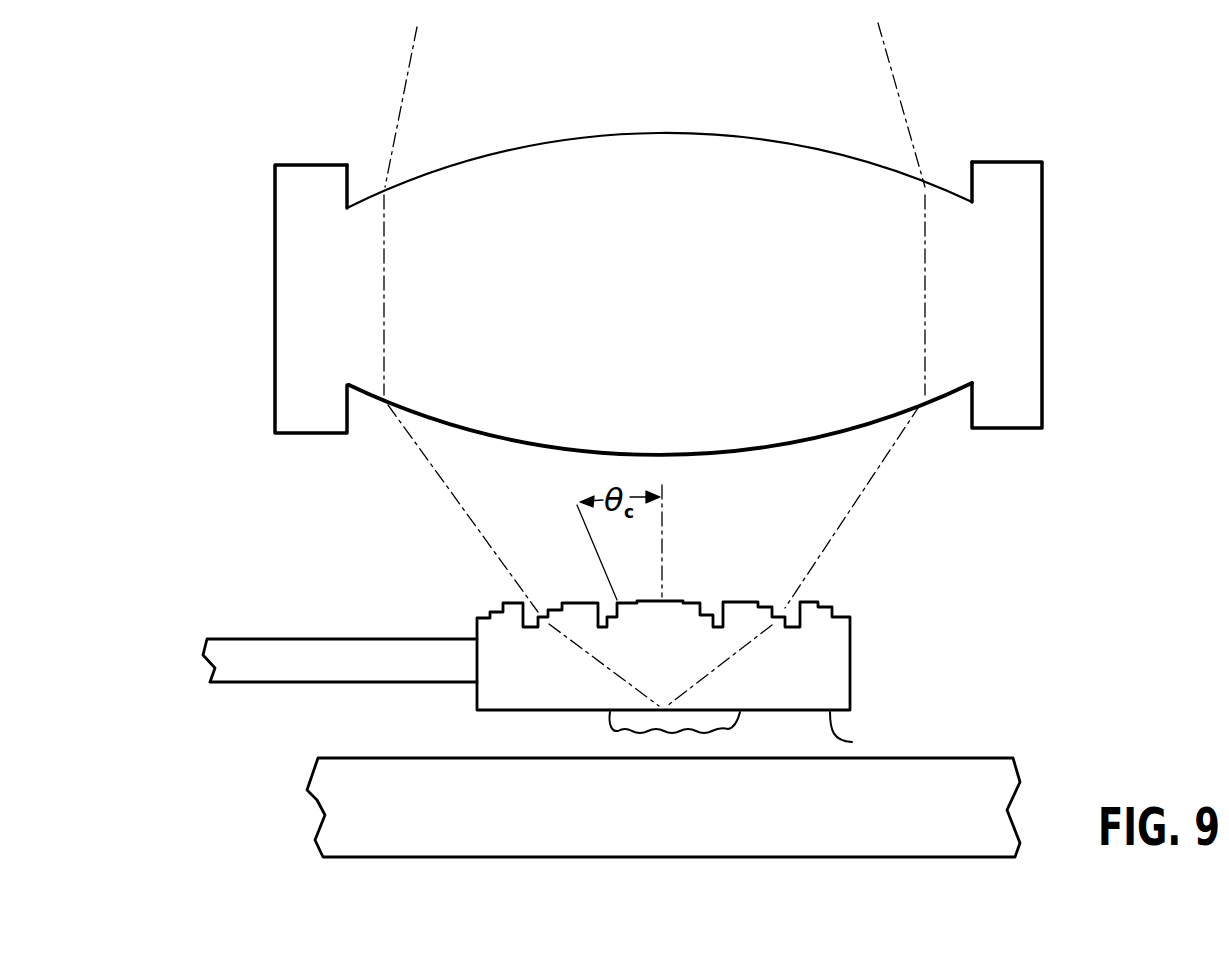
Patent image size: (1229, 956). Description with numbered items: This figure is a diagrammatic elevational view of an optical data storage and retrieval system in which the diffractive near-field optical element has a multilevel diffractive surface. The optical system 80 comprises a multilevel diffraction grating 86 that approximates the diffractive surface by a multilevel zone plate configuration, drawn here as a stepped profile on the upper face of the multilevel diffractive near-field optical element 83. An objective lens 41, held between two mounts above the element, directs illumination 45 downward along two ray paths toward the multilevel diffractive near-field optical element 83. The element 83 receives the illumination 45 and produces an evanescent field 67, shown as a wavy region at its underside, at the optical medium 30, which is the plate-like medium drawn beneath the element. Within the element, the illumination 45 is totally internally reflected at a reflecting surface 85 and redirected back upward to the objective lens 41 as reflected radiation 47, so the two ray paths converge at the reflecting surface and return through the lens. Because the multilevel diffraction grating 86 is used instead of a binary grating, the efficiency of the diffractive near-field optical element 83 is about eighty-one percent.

The optical medium 30 is at (318, 808).
The objective lens 41 is at (1042, 308).
The illumination 45 is at (405, 440).
The reflected radiation 47 is at (900, 440).
The evanescent field 67 is at (610, 728).
The optical system 80 is at (291, 512).
The multilevel diffractive near-field optical element 83 is at (850, 668).
The reflecting surface 85 is at (860, 736).
The multilevel diffraction grating 86 is at (581, 636).